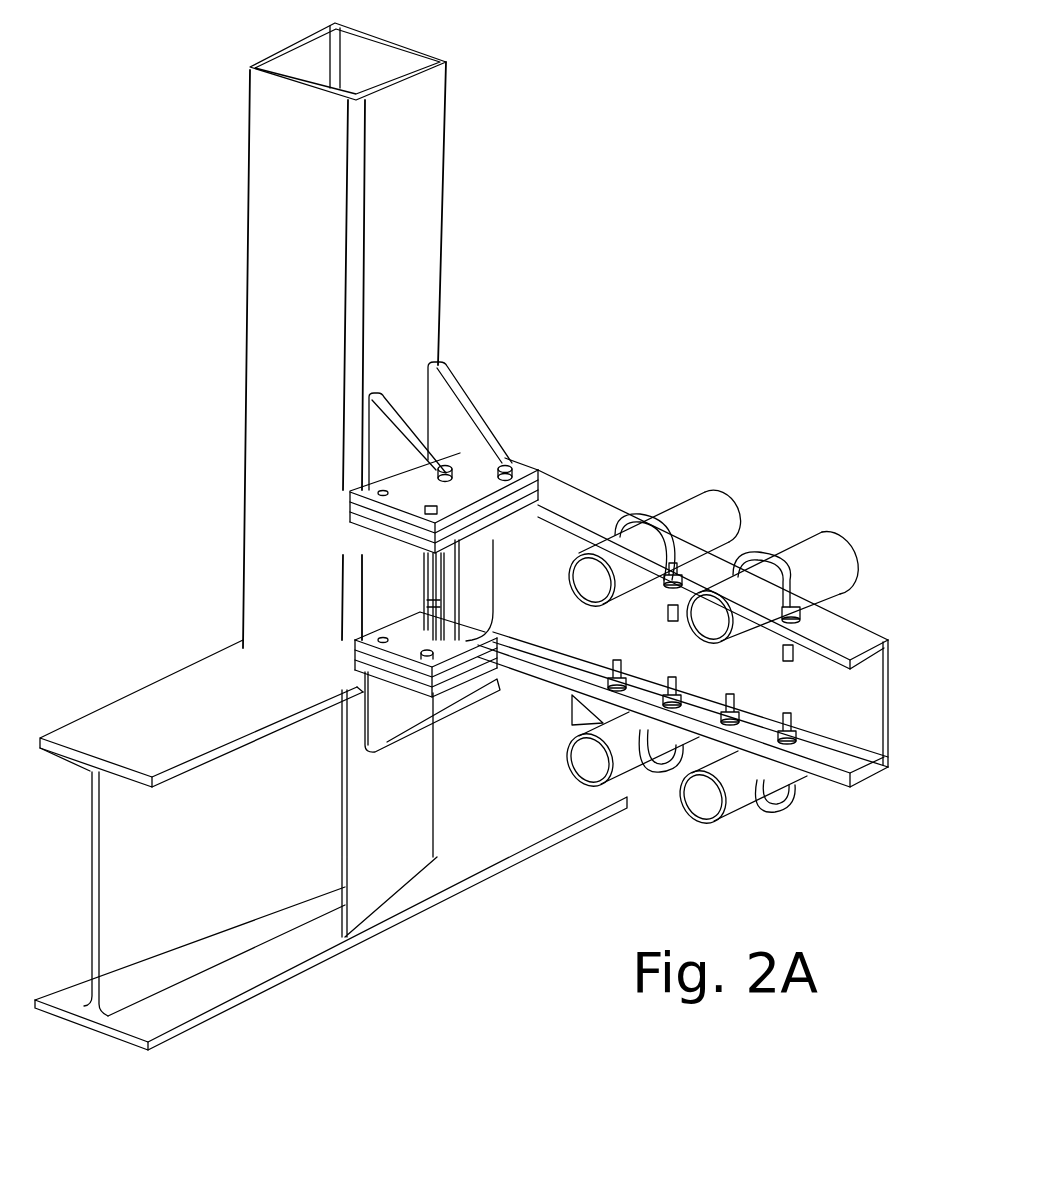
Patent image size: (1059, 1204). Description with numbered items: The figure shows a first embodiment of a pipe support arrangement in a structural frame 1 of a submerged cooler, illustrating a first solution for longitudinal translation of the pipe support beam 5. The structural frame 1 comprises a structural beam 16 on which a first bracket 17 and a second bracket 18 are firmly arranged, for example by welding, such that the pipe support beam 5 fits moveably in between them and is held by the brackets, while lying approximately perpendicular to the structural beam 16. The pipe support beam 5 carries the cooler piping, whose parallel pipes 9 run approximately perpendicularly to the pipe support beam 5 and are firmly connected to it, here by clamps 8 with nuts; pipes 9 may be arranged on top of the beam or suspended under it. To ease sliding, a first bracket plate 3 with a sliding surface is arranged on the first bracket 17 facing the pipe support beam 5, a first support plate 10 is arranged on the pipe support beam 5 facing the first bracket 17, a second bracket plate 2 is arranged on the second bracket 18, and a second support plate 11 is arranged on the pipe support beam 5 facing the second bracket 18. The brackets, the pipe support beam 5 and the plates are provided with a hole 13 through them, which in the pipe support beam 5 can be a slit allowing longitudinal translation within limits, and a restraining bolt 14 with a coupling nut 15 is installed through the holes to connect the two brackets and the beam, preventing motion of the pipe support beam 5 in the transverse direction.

The structural frame 1 is at (128, 740).
The second bracket plate 2 is at (365, 681).
The first bracket plate 3 is at (436, 537).
The pipe support beam 5 is at (540, 537).
The clamps 8 is at (666, 512).
The pipes 9 is at (712, 517).
The first support plate 10 is at (427, 537).
The second support plate 11 is at (400, 665).
The hole 13 is at (430, 632).
The restraining bolt 14 is at (447, 462).
The coupling nut 15 is at (423, 585).
The structural beam 16 is at (410, 292).
The first bracket 17 is at (506, 462).
The second bracket 18 is at (390, 720).